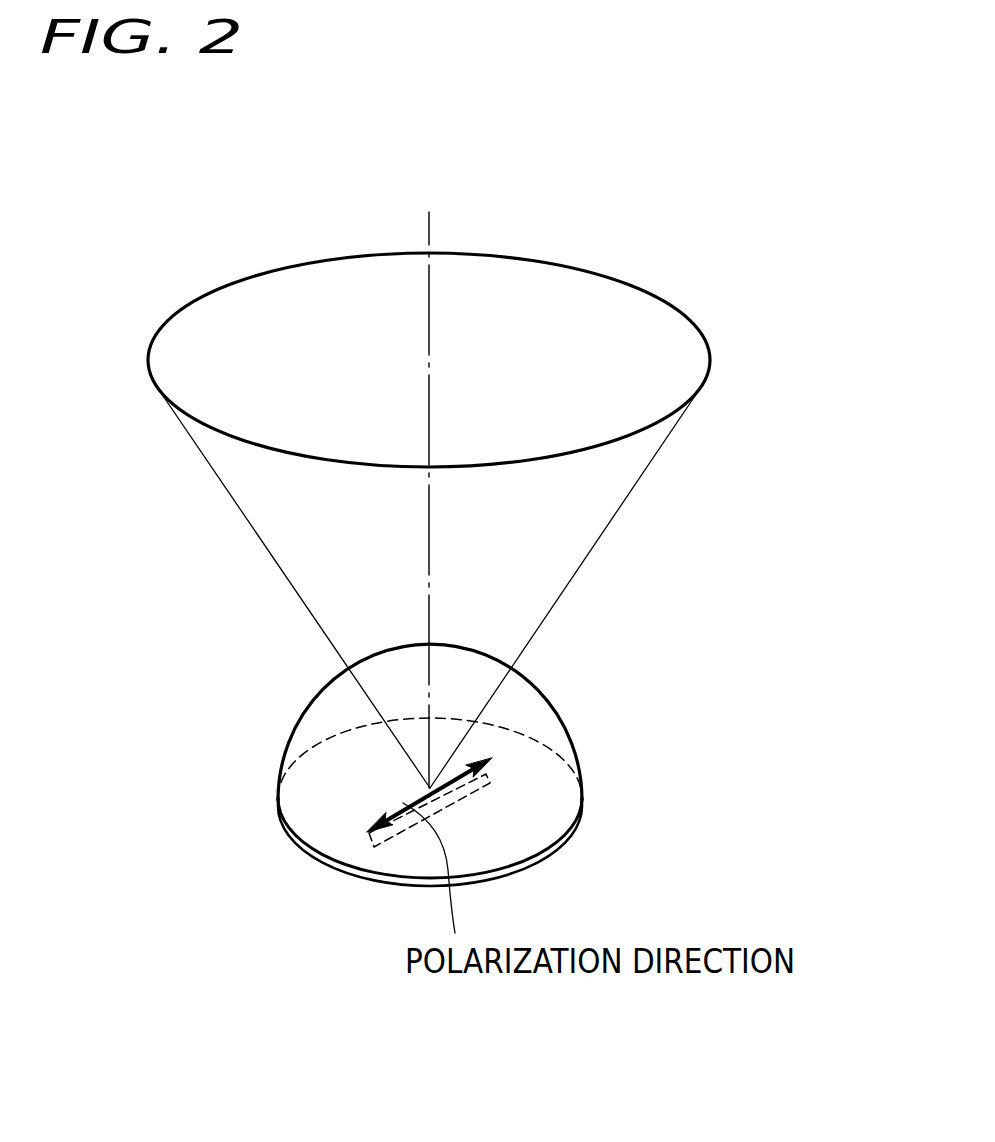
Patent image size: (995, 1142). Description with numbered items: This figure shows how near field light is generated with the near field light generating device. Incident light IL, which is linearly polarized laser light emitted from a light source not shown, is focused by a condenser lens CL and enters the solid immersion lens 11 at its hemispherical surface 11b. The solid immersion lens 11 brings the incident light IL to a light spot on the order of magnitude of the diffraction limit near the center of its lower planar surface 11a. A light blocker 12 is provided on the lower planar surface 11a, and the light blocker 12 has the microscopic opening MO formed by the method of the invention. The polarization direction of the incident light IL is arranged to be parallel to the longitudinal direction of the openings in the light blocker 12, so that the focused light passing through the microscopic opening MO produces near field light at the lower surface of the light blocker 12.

The condenser lens CL is at (670, 305).
The incident light IL is at (643, 477).
The solid immersion lens 11 is at (490, 751).
The lower planar surface 11a is at (537, 817).
The hemispherical surface 11b is at (527, 677).
The light blocker 12 is at (355, 870).
The microscopic opening MO is at (403, 803).